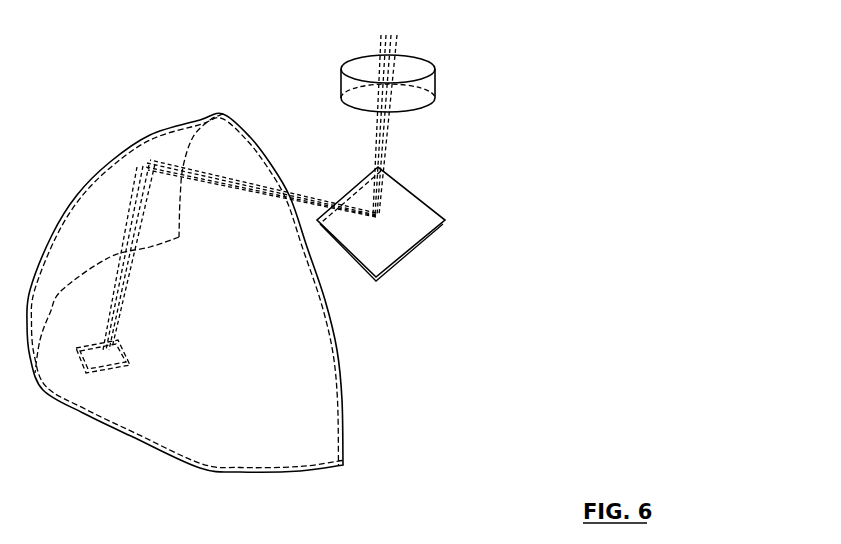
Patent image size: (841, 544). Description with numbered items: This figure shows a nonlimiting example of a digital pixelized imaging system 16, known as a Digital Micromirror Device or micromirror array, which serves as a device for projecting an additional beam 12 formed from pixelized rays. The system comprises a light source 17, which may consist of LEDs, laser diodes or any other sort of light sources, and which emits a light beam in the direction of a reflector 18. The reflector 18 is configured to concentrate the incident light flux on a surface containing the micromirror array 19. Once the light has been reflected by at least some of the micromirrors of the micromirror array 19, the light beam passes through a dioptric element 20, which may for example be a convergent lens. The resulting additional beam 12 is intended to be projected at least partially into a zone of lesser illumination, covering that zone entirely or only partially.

The additional beam 12 is at (392, 36).
The digital pixelized imaging system 16 is at (445, 357).
The light source 17 is at (75, 352).
The reflector 18 is at (325, 443).
The micromirror array 19 is at (417, 208).
The dioptric element 20 is at (435, 80).